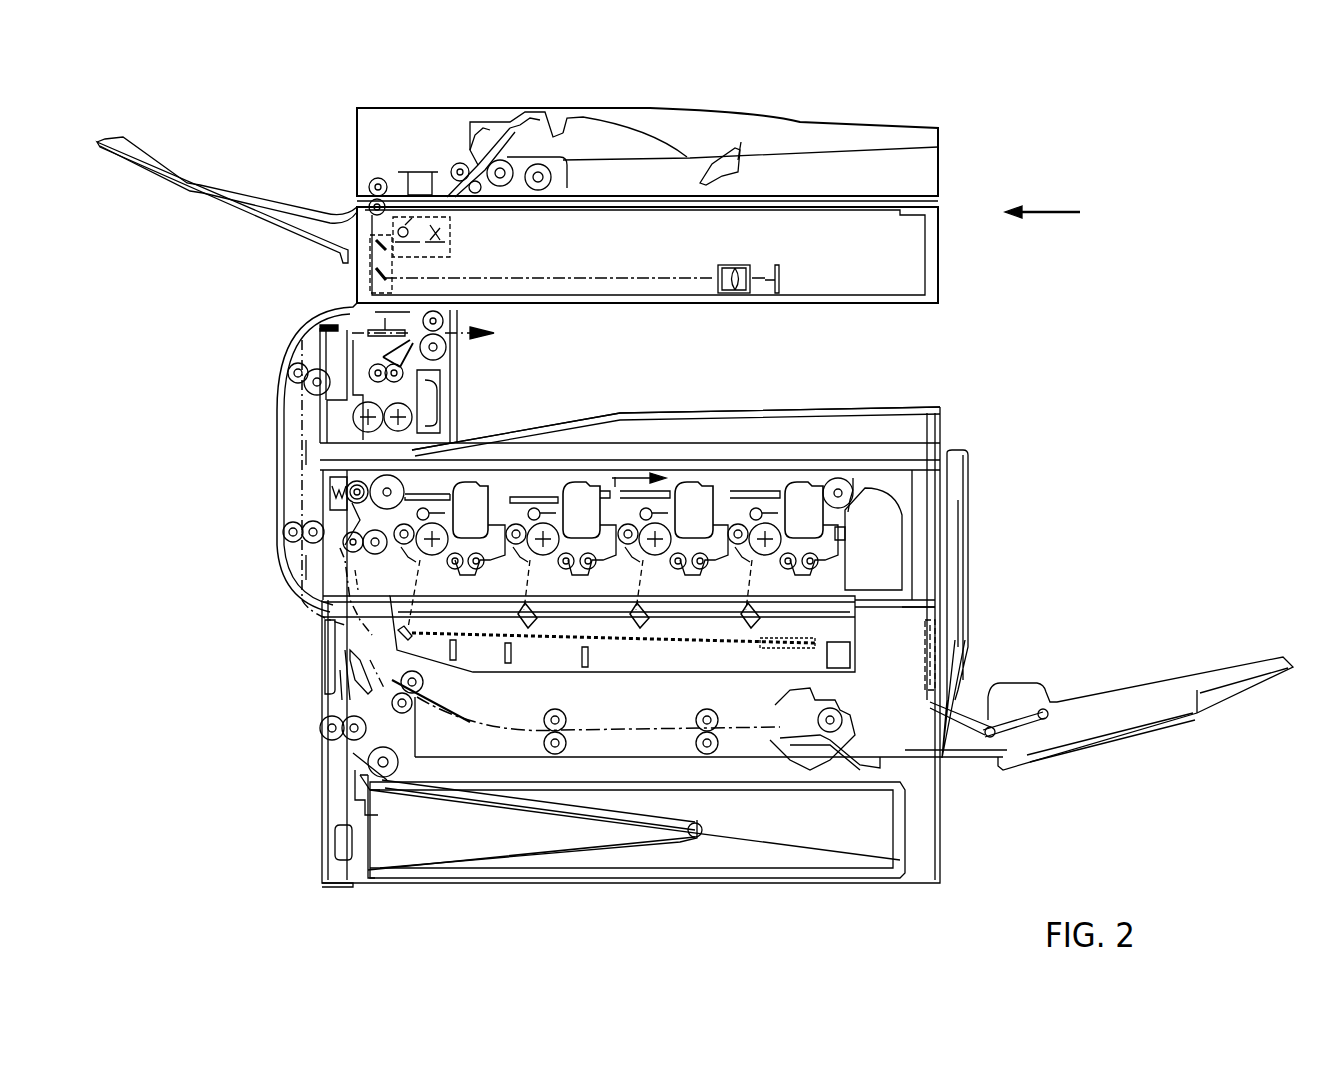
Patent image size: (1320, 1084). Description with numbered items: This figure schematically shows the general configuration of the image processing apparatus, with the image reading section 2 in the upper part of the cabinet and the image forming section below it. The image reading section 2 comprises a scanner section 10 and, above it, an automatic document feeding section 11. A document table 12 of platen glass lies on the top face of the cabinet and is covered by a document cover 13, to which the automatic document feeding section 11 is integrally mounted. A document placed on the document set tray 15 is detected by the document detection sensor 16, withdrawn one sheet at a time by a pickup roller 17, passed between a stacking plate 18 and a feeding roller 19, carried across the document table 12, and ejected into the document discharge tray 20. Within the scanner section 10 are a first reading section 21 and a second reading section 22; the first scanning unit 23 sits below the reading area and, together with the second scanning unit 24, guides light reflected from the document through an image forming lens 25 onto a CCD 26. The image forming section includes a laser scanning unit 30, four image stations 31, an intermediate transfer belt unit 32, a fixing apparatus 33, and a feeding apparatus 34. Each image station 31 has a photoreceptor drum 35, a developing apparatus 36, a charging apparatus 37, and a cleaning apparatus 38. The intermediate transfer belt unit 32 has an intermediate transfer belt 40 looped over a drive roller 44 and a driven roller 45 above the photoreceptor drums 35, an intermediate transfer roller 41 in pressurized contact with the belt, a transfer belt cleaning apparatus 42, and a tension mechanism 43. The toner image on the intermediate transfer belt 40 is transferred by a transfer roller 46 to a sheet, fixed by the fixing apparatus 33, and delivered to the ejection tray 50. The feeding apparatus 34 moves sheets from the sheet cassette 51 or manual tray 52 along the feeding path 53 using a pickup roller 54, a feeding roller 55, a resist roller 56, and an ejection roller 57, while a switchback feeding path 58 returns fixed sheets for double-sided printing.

The image reading section 2 is at (1056, 214).
The scanner section 10 is at (918, 316).
The automatic document feeding section 11 is at (936, 160).
The document table 12 is at (850, 212).
The document cover 13 is at (357, 137).
The document set tray 15 is at (590, 118).
The document detection sensor 16 is at (741, 142).
The pickup roller 17 is at (541, 190).
The stacking plate 18 is at (480, 162).
The feeding roller 19 is at (502, 187).
The document discharge tray 20 is at (183, 145).
The first reading section 21 is at (925, 272).
The second reading section 22 is at (417, 174).
The first scanning unit 23 is at (445, 250).
The second scanning unit 24 is at (370, 276).
The image forming lens 25 is at (742, 265).
The CCD 26 is at (785, 265).
The laser scanning unit 30 is at (690, 668).
The image station 31 is at (490, 455).
The intermediate transfer belt unit 32 is at (874, 475).
The fixing apparatus 33 is at (358, 427).
The feeding apparatus 34 is at (308, 656).
The photoreceptor drum 35 is at (552, 525).
The developing apparatus 36 is at (798, 572).
The charging apparatus 37 is at (648, 560).
The cleaning apparatus 38 is at (690, 563).
The intermediate transfer belt 40 is at (700, 470).
The intermediate transfer roller 41 is at (755, 510).
The transfer belt cleaning apparatus 42 is at (880, 512).
The tension mechanism 43 is at (540, 470).
The drive roller 44 is at (405, 490).
The driven roller 45 is at (838, 478).
The transfer roller 46 is at (315, 550).
The ejection tray 50 is at (488, 470).
The sheet cassette 51 is at (443, 820).
The manual tray 52 is at (1083, 718).
The feeding path 53 is at (405, 686).
The pickup roller 54 is at (398, 760).
The feeding roller 55 is at (320, 727).
The resist roller 56 is at (376, 555).
The ejection roller 57 is at (460, 322).
The switchback feeding path 58 is at (300, 500).